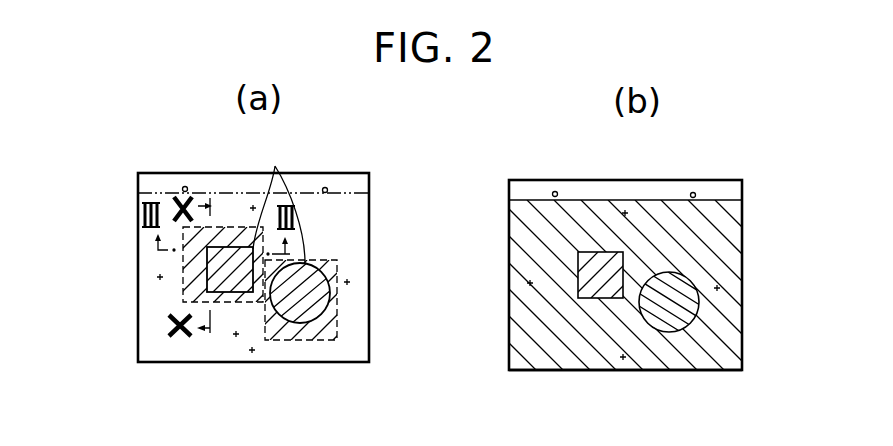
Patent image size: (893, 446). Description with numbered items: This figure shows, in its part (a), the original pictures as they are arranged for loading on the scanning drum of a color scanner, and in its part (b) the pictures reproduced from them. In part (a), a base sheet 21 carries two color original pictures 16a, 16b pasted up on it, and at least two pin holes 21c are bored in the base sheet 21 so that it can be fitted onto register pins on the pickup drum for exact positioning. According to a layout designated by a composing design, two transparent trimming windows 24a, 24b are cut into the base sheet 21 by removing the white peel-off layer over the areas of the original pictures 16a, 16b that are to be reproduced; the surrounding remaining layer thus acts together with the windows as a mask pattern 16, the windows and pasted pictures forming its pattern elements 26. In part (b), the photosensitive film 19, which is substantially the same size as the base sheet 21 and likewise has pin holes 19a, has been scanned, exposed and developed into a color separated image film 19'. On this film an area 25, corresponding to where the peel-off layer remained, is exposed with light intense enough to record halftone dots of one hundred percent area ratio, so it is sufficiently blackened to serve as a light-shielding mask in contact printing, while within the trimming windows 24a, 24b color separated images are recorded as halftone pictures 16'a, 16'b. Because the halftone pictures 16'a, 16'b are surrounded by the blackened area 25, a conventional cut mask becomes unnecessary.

The mask pattern 16 is at (216, 273).
The color original picture 16a is at (183, 290).
The color original picture 16b is at (313, 341).
The base sheet 21 is at (134, 246).
The pin holes 21c is at (185, 186).
The trimming window 24a is at (211, 288).
The trimming window 24b is at (327, 307).
The pattern elements 26 is at (279, 204).
The photosensitive film 19 is at (616, 275).
The color separated image film 19' is at (651, 218).
The pin holes 19a is at (555, 191).
The halftone picture 16'a is at (567, 291).
The halftone picture 16'b is at (674, 304).
The area 25 is at (582, 360).